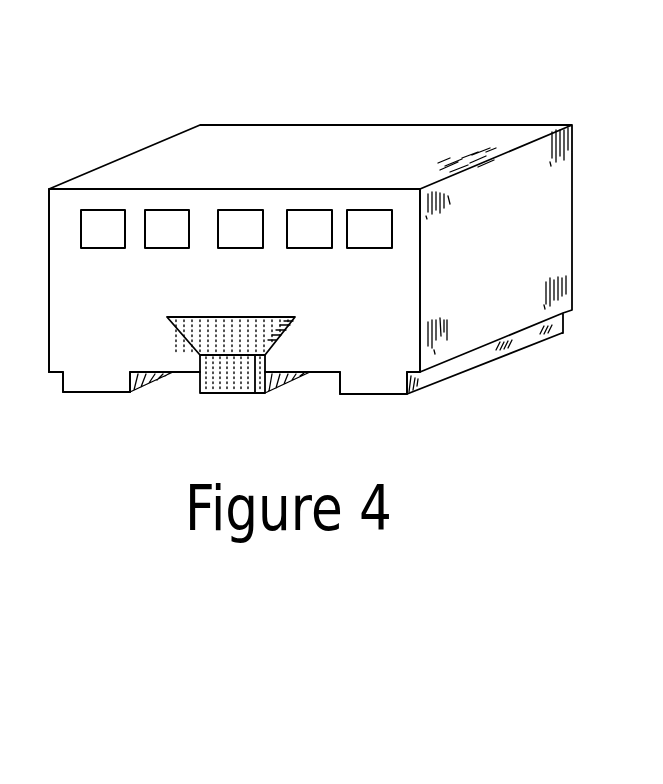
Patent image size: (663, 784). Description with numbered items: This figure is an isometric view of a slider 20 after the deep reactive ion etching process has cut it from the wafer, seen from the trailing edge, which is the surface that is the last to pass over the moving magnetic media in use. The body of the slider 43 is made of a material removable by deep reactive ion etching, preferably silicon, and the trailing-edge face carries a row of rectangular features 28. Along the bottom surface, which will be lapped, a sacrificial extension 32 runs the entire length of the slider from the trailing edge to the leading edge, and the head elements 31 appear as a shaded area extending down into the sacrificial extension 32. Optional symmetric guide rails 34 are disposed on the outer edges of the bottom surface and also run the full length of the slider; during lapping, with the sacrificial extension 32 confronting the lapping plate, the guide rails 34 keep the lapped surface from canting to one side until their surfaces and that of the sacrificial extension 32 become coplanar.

The slider 20 is at (472, 107).
The openings 28 is at (101, 236).
The head elements 31 is at (260, 325).
The sacrificial extension 32 is at (258, 385).
The guide rails 34 is at (385, 413).
The body of the slider 43 is at (388, 345).